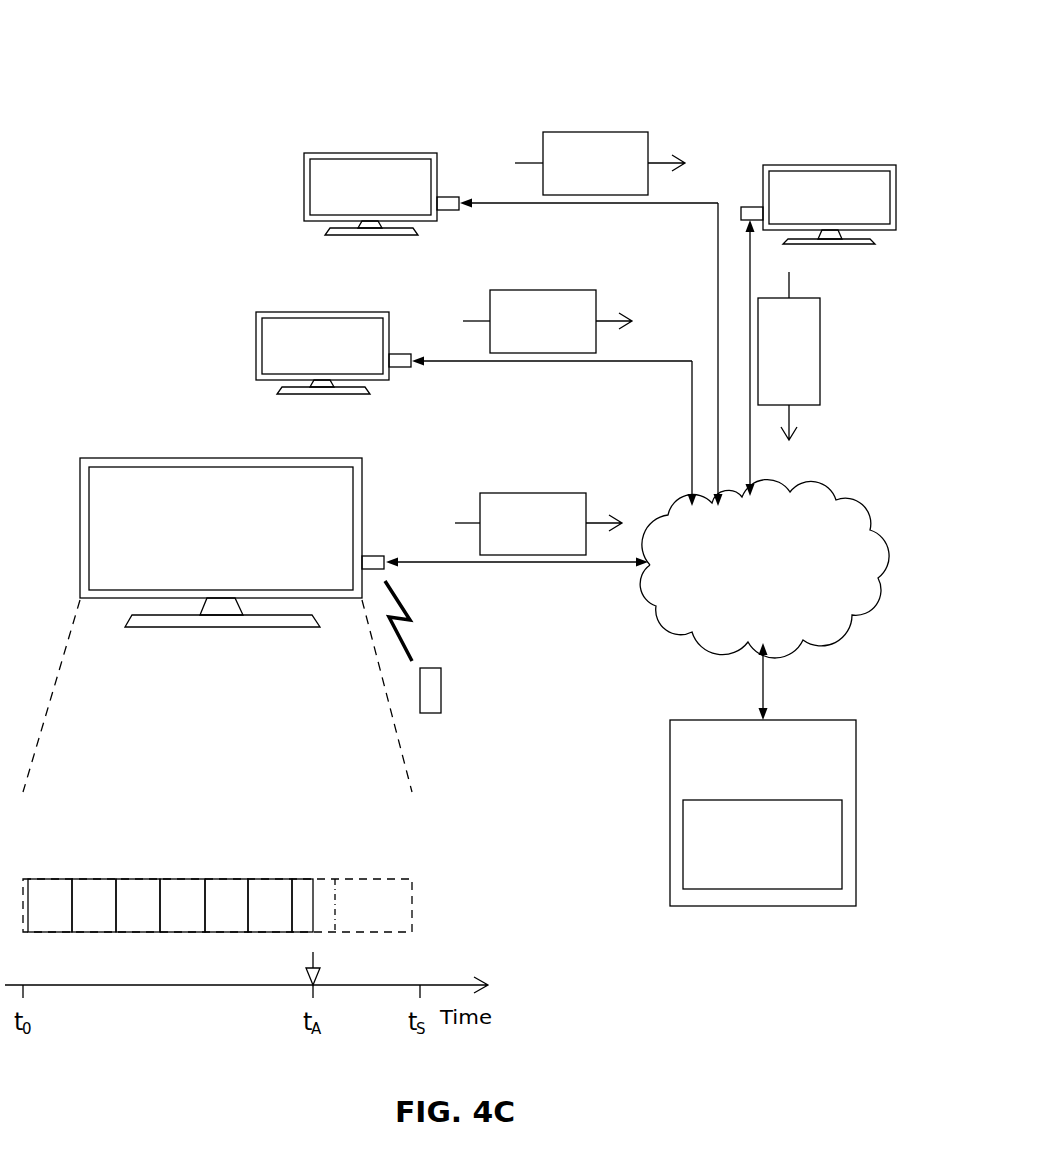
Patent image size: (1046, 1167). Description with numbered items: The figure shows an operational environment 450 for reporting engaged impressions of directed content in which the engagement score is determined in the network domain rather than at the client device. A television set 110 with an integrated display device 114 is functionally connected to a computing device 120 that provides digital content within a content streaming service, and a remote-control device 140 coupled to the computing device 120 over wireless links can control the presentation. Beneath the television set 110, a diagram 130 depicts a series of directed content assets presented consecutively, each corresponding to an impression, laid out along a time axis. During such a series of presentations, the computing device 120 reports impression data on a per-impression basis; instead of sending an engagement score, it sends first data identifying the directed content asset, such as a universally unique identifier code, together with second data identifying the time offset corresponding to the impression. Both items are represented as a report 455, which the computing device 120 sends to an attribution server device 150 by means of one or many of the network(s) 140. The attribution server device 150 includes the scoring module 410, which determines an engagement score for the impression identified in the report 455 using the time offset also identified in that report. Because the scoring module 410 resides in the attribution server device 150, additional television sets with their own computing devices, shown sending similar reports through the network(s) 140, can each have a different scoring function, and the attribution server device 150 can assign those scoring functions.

The operational environment 450 is at (130, 54).
The television set 110 is at (101, 458).
The display device 114 is at (338, 499).
The computing device 120 is at (375, 556).
The network(s) 140 is at (441, 683).
The diagram 130 is at (284, 758).
The report 455 is at (533, 493).
The attribution server device 150 is at (826, 720).
The scoring module 410 is at (842, 800).